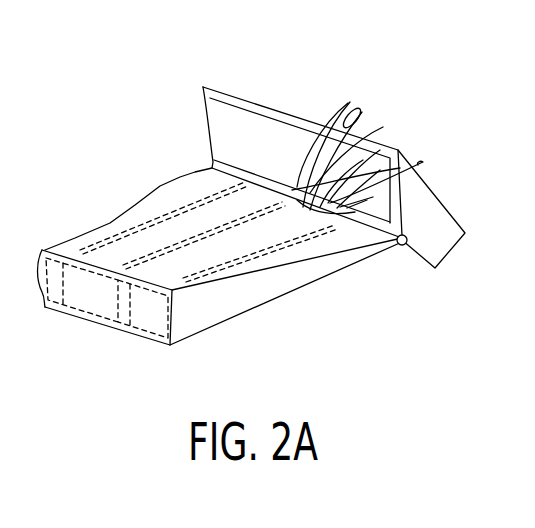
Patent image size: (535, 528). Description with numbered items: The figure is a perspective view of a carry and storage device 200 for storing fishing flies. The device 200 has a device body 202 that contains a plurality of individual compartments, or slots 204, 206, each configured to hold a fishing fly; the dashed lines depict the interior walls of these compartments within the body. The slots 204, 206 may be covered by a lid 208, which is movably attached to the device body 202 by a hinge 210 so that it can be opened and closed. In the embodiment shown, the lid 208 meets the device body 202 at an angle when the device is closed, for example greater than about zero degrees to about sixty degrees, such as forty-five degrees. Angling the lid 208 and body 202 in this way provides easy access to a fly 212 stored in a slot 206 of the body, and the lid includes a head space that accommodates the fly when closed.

The device 200 is at (194, 116).
The device body 202 is at (233, 300).
The compartment (slot) 204 is at (82, 312).
The compartment (slot) 206 is at (137, 333).
The lid 208 is at (447, 248).
The hinge 210 is at (401, 246).
The fly 212 is at (318, 160).